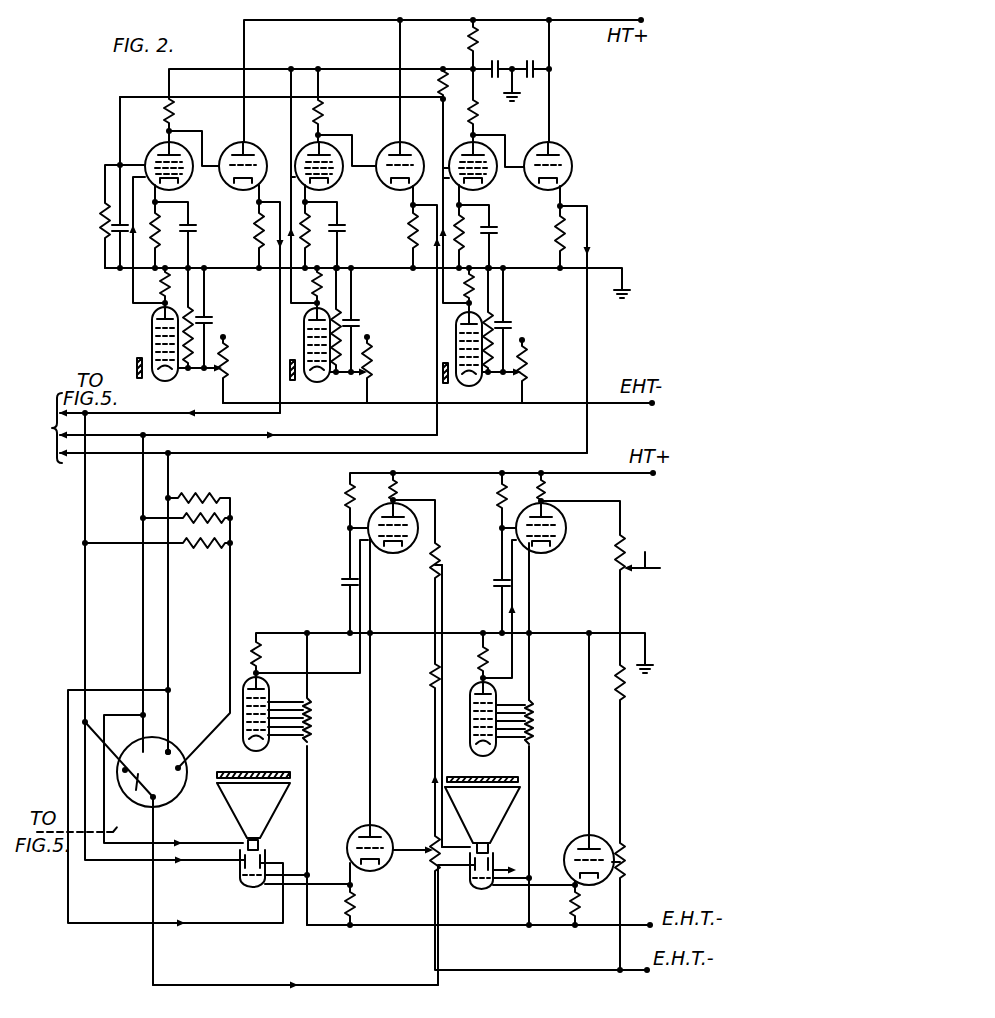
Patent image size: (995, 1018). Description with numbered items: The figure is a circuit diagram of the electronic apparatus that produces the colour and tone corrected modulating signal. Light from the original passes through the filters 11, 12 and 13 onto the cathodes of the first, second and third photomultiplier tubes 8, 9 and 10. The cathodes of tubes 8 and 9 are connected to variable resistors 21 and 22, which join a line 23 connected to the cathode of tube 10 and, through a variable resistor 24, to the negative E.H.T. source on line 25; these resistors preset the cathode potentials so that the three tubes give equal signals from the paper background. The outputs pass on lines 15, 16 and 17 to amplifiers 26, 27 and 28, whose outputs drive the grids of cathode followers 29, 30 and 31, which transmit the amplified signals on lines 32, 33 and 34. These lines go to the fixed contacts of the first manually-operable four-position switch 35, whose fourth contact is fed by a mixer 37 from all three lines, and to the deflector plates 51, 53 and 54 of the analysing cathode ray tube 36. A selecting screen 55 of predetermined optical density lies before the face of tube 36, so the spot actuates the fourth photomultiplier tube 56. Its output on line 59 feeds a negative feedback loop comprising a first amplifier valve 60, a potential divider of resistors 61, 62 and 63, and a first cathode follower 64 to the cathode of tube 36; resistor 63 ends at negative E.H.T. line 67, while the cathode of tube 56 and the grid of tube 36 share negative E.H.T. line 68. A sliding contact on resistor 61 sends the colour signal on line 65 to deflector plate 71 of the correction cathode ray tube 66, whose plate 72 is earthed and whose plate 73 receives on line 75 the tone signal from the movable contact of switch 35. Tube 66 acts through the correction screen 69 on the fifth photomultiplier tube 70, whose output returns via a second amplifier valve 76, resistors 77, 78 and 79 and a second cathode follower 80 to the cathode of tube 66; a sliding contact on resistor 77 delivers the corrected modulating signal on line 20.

The first photomultiplier tube 8 is at (152, 328).
The second photomultiplier tube 9 is at (304, 331).
The third photomultiplier tube 10 is at (456, 338).
The filter 11 is at (137, 365).
The filter 12 is at (293, 380).
The filter 13 is at (447, 380).
The line 15 is at (133, 286).
The line 16 is at (291, 291).
The line 17 is at (443, 292).
The line 20 is at (642, 552).
The variable resistor 21 is at (229, 362).
The variable resistor 22 is at (373, 362).
The line 23 is at (478, 404).
The variable resistor 24 is at (528, 365).
The line 25 is at (634, 404).
The amplifier 26 is at (158, 146).
The amplifier 27 is at (334, 184).
The amplifier 28 is at (488, 186).
The cathode follower 29 is at (236, 145).
The cathode follower 30 is at (392, 189).
The cathode follower 31 is at (573, 165).
The line 32 is at (138, 414).
The line 33 is at (143, 472).
The line 34 is at (282, 453).
The first manually-operable four-position switch 35 is at (143, 806).
The analysing cathode ray tube 36 is at (265, 811).
The mixer 37 is at (236, 510).
The deflector plate 51 is at (240, 868).
The deflector plate 53 is at (263, 838).
The deflector plate 54 is at (262, 862).
The selecting screen 55 is at (242, 773).
The fourth photomultiplier tube 56 is at (271, 746).
The line 59 is at (316, 675).
The first amplifier valve 60 is at (395, 553).
The resistor 61 is at (440, 554).
The resistor 62 is at (435, 683).
The resistor 63 is at (434, 843).
The first cathode follower 64 is at (351, 828).
The line 65 is at (445, 604).
The correction cathode ray tube 66 is at (489, 825).
The line 67 is at (642, 972).
The line 68 is at (640, 923).
The correction screen 69 is at (465, 777).
The fifth photomultiplier tube 70 is at (470, 712).
The deflector plate 71 is at (477, 843).
The deflector plate 72 is at (489, 863).
The deflector plate 73 is at (478, 891).
The line 75 is at (337, 985).
The second amplifier valve 76 is at (552, 549).
The resistor 77 is at (620, 556).
The resistor 78 is at (624, 680).
The resistor 79 is at (624, 853).
The second cathode follower 80 is at (582, 836).